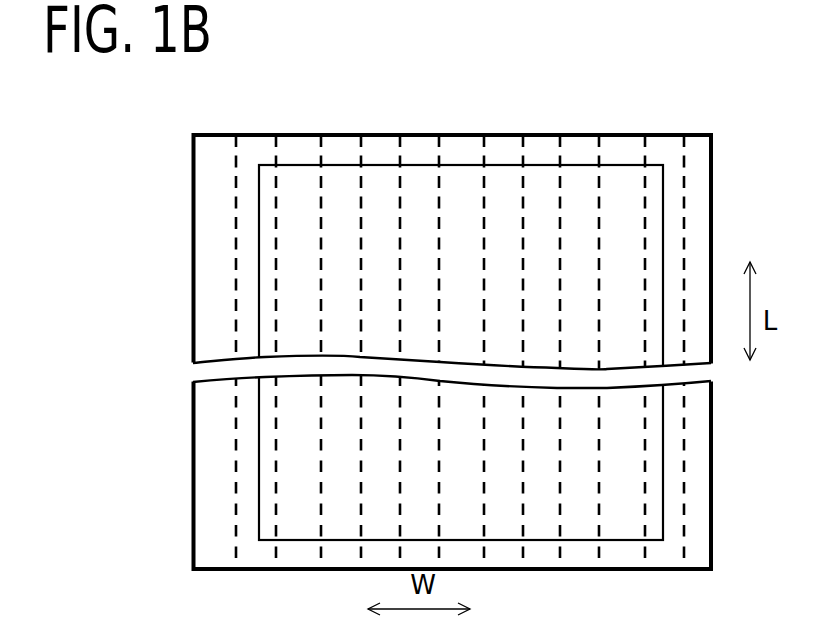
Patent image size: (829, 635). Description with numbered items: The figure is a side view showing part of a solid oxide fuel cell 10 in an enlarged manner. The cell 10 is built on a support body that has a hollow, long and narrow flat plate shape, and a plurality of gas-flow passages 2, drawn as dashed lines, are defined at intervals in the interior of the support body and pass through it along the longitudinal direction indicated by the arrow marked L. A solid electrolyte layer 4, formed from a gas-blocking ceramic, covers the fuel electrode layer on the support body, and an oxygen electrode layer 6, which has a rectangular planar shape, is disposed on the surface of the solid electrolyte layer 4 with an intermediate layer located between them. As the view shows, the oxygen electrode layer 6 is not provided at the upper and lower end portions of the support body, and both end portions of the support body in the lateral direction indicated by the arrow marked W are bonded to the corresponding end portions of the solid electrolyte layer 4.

The gas-flow passages 2 is at (274, 216).
The solid electrolyte layer 4 is at (220, 152).
The oxygen electrode layer 6 is at (355, 208).
The fuel cell 10 is at (499, 134).